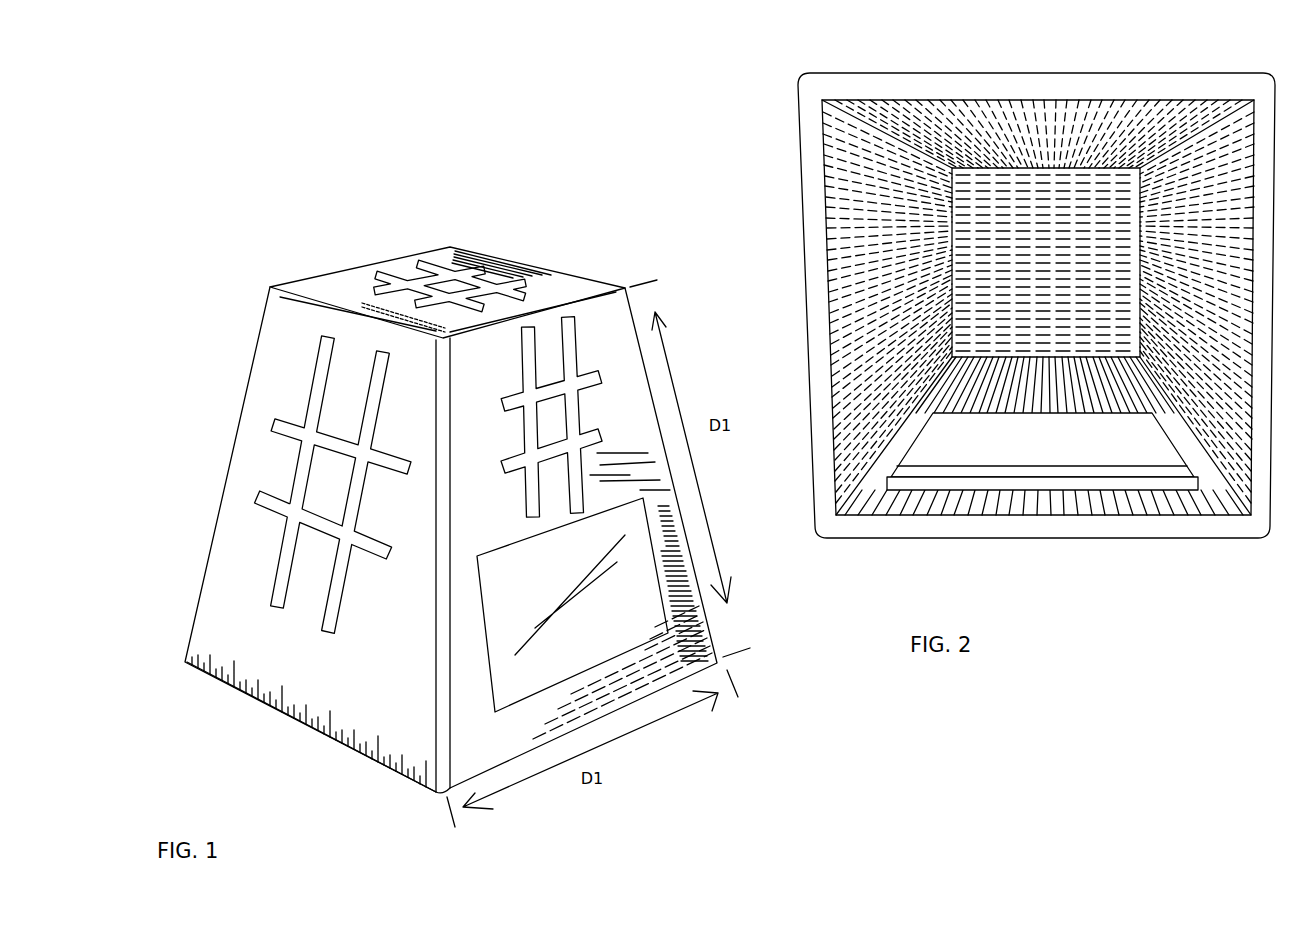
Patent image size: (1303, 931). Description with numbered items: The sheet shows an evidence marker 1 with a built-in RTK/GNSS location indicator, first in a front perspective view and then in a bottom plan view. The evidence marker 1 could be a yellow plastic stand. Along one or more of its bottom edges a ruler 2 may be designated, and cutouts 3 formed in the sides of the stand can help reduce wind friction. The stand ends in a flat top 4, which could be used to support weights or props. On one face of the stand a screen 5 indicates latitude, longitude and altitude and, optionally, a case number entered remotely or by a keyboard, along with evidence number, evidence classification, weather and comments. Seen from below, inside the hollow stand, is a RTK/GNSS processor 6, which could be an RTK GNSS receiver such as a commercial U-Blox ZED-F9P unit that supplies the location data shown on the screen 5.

In FIG. 1, the evidence marker 1 is at (282, 325).
In FIG. 2, the evidence marker 1 is at (800, 120).
In FIG. 1, the ruler 2 is at (293, 715).
In FIG. 2, the ruler 2 is at (1075, 80).
In FIG. 1, the cutouts 3 is at (300, 437).
In FIG. 1, the flat top 4 is at (510, 262).
In FIG. 1, the screen 5 is at (605, 618).
In FIG. 2, the RTK/GNSS processor 6 is at (1053, 470).